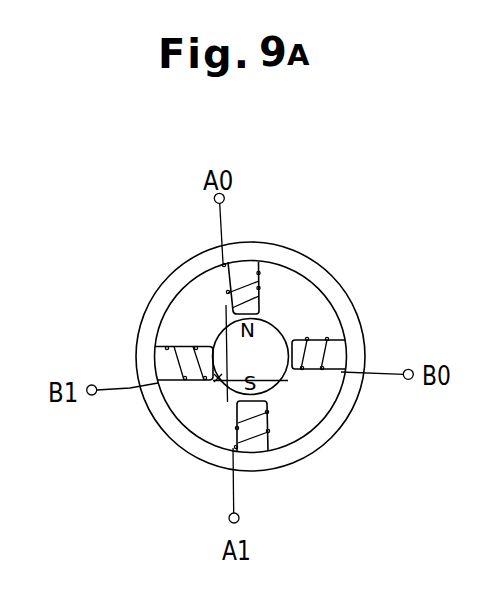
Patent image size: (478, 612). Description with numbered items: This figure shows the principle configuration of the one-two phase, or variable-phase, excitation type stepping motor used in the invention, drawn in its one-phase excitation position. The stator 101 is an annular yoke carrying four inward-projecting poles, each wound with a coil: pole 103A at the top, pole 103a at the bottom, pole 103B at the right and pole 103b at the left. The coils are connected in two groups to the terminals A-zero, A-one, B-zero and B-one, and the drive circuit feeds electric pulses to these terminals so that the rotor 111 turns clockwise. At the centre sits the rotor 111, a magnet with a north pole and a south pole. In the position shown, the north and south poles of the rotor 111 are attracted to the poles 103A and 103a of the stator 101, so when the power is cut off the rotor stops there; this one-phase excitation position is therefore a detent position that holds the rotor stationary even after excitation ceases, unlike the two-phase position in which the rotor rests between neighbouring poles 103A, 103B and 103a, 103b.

The stator 101 is at (165, 292).
The pole 103A is at (255, 305).
The pole 103a is at (243, 412).
The pole 103B is at (300, 367).
The pole 103b is at (180, 345).
The rotor 111 is at (220, 375).